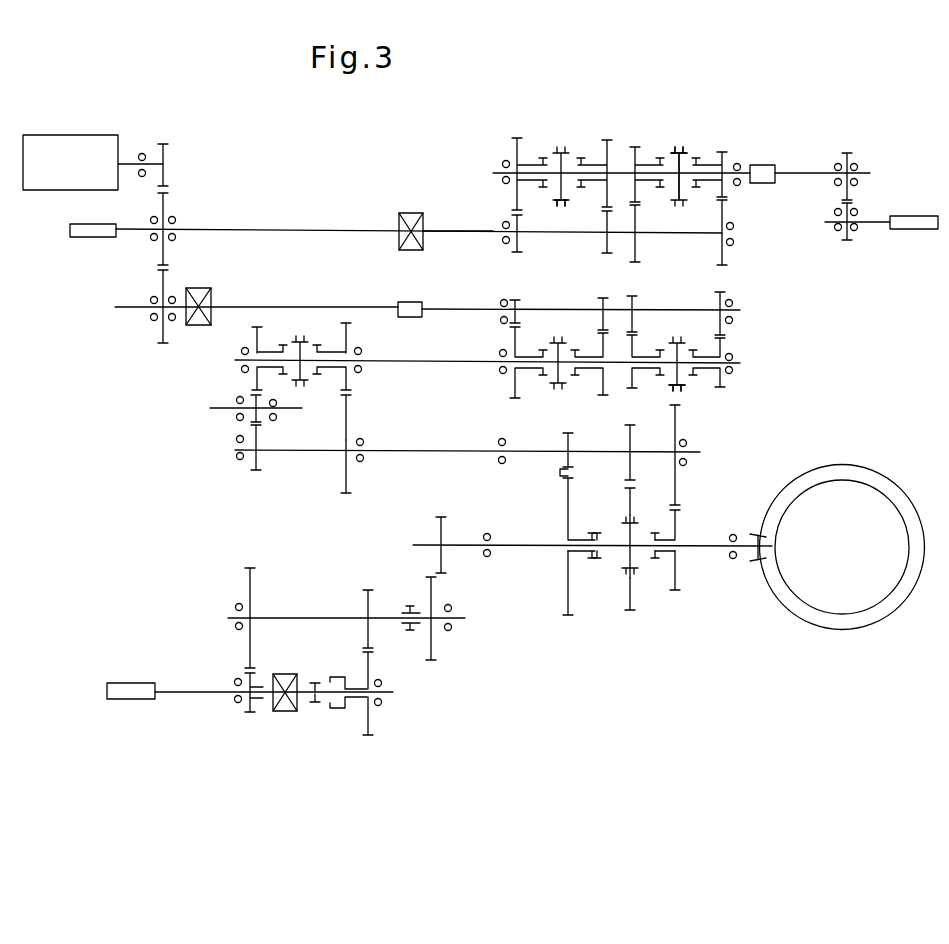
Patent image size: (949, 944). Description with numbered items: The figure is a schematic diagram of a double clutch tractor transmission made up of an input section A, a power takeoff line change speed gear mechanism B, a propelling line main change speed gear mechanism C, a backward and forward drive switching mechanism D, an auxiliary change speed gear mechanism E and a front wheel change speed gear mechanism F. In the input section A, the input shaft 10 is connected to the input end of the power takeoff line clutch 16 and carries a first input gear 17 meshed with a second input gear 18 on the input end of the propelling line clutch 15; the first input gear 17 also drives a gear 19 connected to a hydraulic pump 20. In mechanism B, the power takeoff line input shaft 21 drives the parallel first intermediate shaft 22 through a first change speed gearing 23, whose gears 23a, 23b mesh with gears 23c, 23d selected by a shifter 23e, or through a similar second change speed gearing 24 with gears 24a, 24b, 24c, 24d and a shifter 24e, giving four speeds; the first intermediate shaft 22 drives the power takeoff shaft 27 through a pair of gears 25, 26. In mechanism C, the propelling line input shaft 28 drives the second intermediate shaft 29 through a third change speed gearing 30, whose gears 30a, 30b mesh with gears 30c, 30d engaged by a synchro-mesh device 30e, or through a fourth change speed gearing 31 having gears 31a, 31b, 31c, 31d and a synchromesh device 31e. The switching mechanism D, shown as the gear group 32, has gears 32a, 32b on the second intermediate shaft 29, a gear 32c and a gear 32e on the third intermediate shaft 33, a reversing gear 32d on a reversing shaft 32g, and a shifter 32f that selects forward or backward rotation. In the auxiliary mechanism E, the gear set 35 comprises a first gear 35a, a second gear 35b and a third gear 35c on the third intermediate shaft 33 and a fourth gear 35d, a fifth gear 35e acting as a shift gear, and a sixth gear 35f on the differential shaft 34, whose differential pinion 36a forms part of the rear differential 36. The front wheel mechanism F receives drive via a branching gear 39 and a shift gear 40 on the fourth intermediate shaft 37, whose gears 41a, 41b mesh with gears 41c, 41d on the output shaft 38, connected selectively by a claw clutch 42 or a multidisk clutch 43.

The input shaft 10 is at (236, 229).
The propelling line clutch 15 is at (212, 290).
The power takeoff line clutch 16 is at (412, 213).
The first input gear 17 is at (166, 194).
The second input gear 18 is at (168, 343).
The gear 19 is at (166, 146).
The hydraulic pump 20 is at (93, 162).
The power takeoff line input shaft 21 is at (462, 235).
The first intermediate shaft 22 is at (797, 176).
The first change speed gearing 23 is at (567, 137).
The gear 23a is at (520, 242).
The gear 23b is at (605, 240).
The gear 23c is at (516, 138).
The gear 23d is at (607, 140).
The shifter 23e is at (562, 204).
The second change speed gearing 24 is at (672, 137).
The gear 24a is at (637, 247).
The gear 24b is at (727, 258).
The gear 24c is at (638, 192).
The gear 24d is at (727, 157).
The shifter 24e is at (683, 148).
The gear 25 is at (852, 157).
The gear 26 is at (857, 238).
The power takeoff shaft 27 is at (923, 229).
The propelling line input shaft 28 is at (443, 308).
The second intermediate shaft 29 is at (447, 363).
The third change speed gearing 30 is at (546, 389).
The gear 30a is at (520, 305).
The gear 30b is at (607, 305).
The gear 30c is at (512, 396).
The gear 30d is at (603, 387).
The synchro-mesh device 30e is at (559, 387).
The fourth change speed gearing 31 is at (692, 390).
The gear 31a is at (634, 320).
The gear 31b is at (727, 293).
The gear 31c is at (634, 386).
The gear 31d is at (723, 377).
The synchromesh device 31e is at (688, 393).
The synchronizer 32 is at (300, 361).
The gear 32a is at (350, 335).
The gear 32b is at (260, 340).
The gear 32c is at (348, 478).
The reversing gear 32d is at (258, 415).
The gear 32e is at (258, 470).
The shifter 32f is at (346, 417).
The reversing shaft 32g is at (225, 410).
The third intermediate shaft 33 is at (470, 452).
The differential shaft 34 is at (528, 547).
The synchronizer 35 is at (626, 546).
The first gear 35a is at (565, 480).
The second gear 35b is at (626, 470).
The third gear 35c is at (677, 482).
The fourth gear 35d is at (567, 597).
The fifth gear 35e is at (628, 597).
The sixth gear 35f is at (675, 578).
The rear differential 36 is at (800, 622).
The differential pinion 36a is at (760, 563).
The fourth intermediate shaft 37 is at (300, 617).
The output shaft 38 is at (183, 692).
The branching gear 39 is at (440, 523).
The shift gear 40 is at (432, 650).
The gear 41a is at (367, 598).
The gear 41b is at (248, 582).
The gear 41c is at (370, 718).
The gear 41d is at (253, 707).
The claw clutch 42 is at (323, 713).
The multidisk clutch 43 is at (290, 674).
The input section A is at (130, 362).
The power takeoff line change speed gear mechanism B is at (690, 125).
The propelling line main change speed gear mechanism C is at (738, 340).
The backward and forward drive switching mechanism D is at (208, 394).
The auxiliary change speed gear mechanism E is at (653, 612).
The front wheel change speed gear mechanism F is at (233, 737).